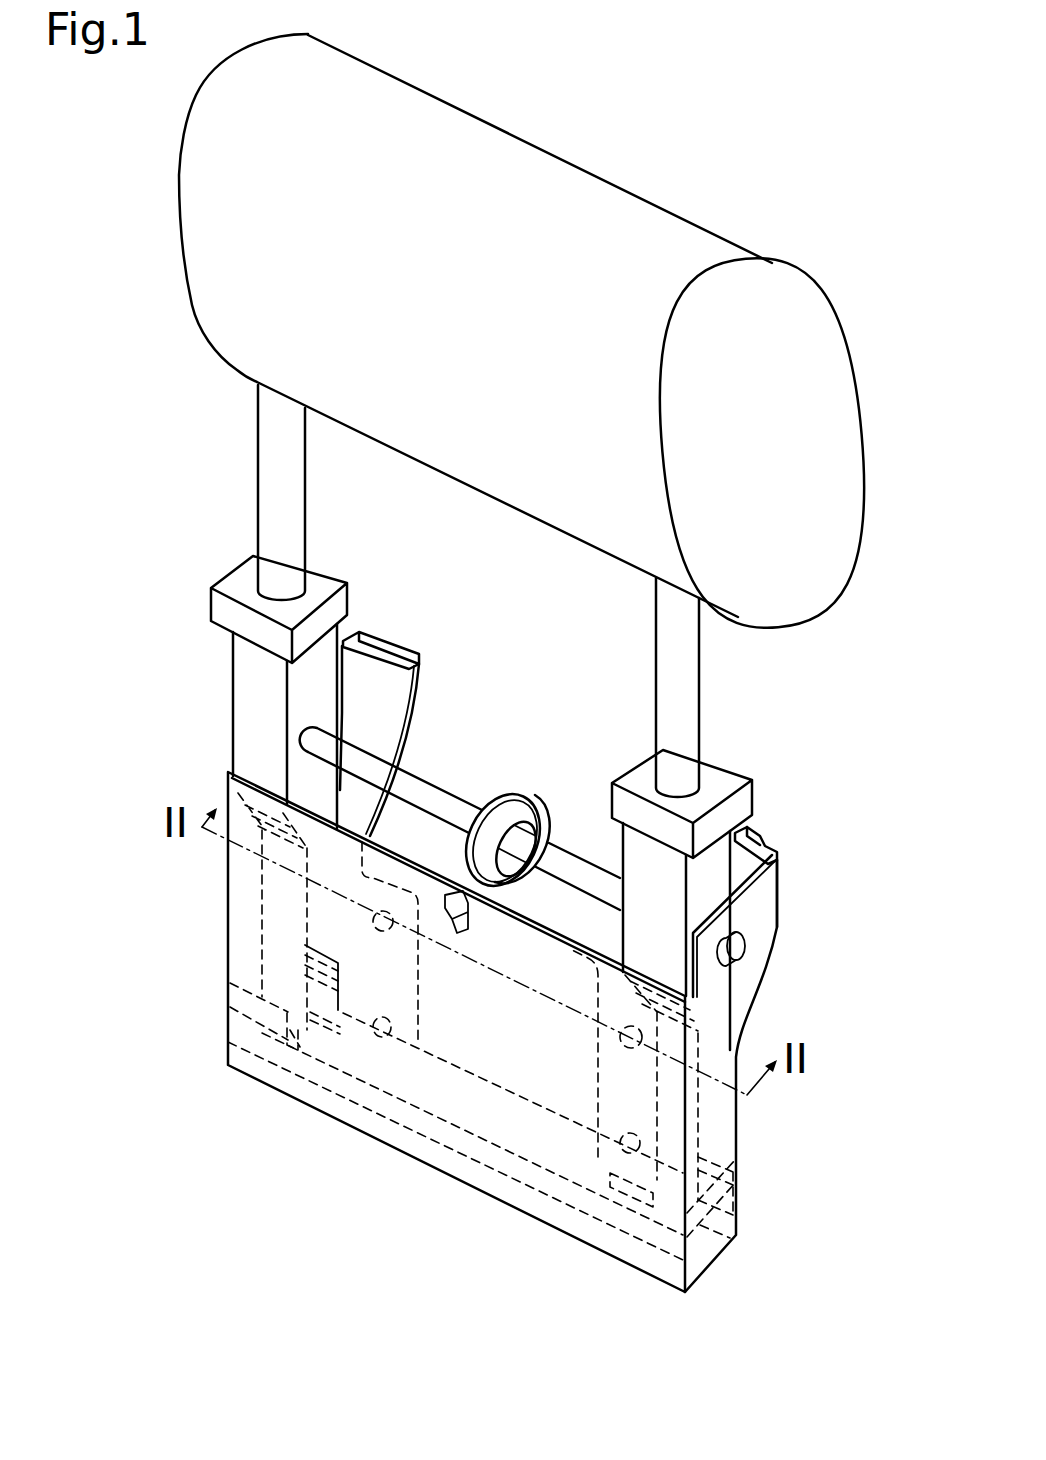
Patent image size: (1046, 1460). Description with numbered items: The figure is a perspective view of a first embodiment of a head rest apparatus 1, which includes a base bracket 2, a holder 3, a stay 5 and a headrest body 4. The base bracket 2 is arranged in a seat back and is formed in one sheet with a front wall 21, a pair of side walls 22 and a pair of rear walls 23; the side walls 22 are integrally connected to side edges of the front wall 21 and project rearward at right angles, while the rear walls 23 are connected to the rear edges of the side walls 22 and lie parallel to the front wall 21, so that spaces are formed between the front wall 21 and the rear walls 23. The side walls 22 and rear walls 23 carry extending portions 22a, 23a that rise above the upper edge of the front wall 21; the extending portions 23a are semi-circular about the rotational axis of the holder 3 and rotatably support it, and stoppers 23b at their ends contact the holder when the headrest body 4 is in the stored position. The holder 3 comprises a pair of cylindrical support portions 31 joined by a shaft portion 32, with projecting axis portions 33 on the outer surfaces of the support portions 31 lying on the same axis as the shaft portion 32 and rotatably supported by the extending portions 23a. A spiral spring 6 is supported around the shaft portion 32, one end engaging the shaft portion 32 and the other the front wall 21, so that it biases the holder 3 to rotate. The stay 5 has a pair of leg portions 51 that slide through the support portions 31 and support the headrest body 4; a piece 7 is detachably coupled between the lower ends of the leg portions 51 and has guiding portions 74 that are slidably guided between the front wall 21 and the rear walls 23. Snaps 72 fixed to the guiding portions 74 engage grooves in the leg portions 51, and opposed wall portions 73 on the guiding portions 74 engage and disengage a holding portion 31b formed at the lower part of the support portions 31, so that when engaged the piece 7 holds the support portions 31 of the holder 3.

The head rest apparatus 1 is at (870, 441).
The base bracket 2 is at (223, 878).
The holder 3 is at (231, 671).
The headrest body 4 is at (643, 215).
The stay 5 is at (256, 470).
The spiral spring 6 is at (517, 800).
The piece 7 is at (482, 1183).
The front wall 21 is at (355, 1115).
The side walls 22 is at (243, 933).
The extending portions of side walls 22a is at (335, 668).
The rear walls 23 is at (368, 902).
The extending portions of rear walls 23a is at (397, 697).
The stoppers 23b is at (392, 643).
The support portions 31 is at (243, 742).
The holding portion 31b is at (245, 807).
The shaft portion 32 is at (413, 788).
The projecting axis portions 33 is at (745, 946).
The leg portions 51 is at (275, 521).
The snaps 72 is at (332, 1030).
The wall portions 73 is at (307, 963).
The guiding portions 74 is at (313, 1010).